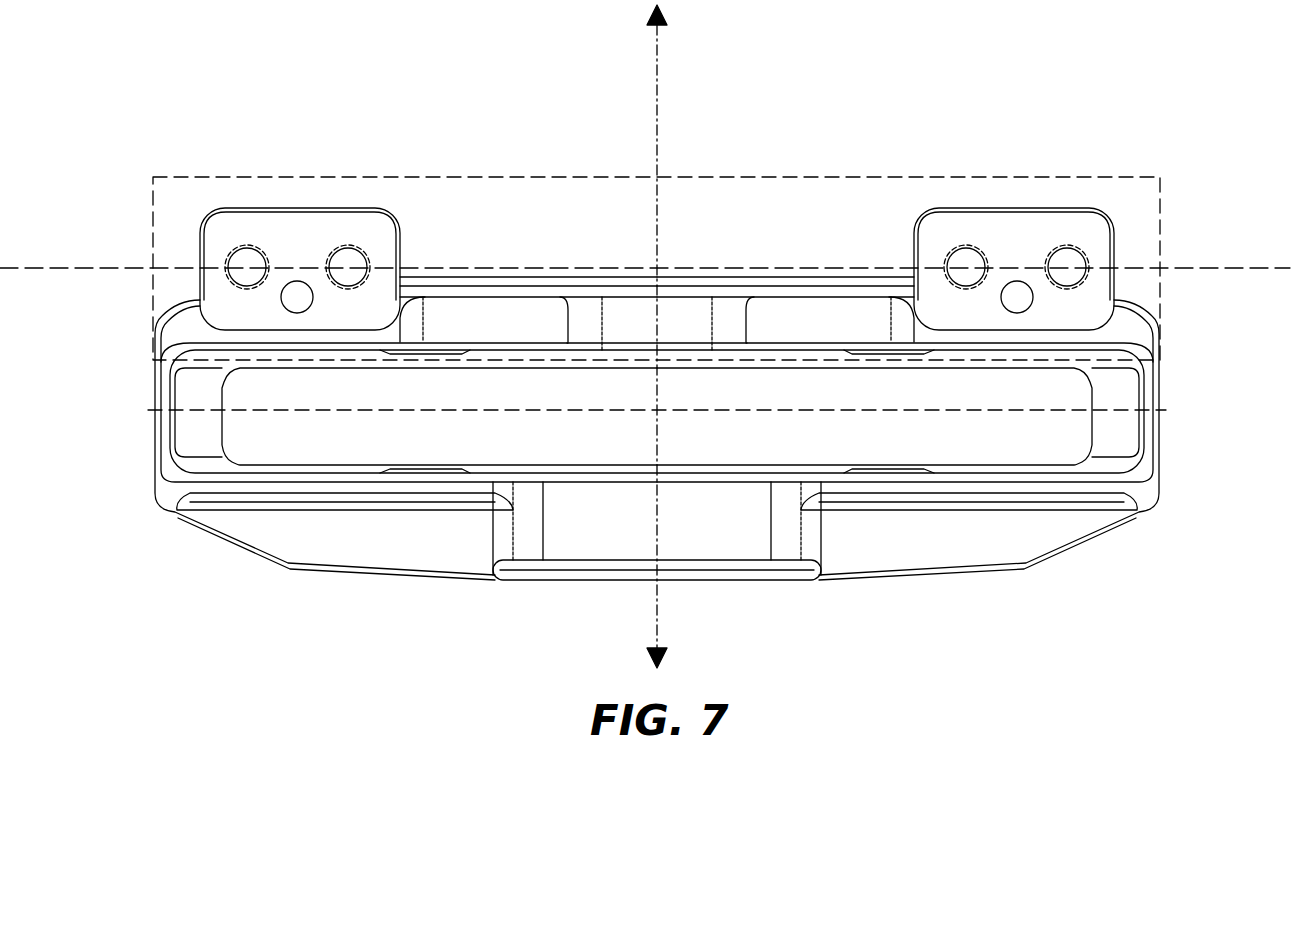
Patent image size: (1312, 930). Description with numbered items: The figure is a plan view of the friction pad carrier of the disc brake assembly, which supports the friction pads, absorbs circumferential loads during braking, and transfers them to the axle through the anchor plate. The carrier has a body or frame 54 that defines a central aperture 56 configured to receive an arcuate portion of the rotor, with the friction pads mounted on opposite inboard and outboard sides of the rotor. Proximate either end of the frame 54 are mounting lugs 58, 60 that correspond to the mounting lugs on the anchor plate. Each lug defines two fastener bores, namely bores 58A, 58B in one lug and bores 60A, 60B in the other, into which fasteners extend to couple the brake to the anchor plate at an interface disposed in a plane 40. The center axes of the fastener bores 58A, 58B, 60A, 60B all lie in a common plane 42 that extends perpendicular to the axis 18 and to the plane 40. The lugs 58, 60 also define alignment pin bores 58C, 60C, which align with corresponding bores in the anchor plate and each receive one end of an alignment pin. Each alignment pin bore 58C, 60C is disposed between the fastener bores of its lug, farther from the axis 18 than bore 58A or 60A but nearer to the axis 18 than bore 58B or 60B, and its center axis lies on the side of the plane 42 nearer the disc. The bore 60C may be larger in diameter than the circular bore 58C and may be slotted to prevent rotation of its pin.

The axis 18 is at (657, 122).
The plane 40 is at (1162, 210).
The common plane 42 is at (1238, 267).
The frame 54 is at (667, 535).
The central aperture 56 is at (718, 380).
The mounting lug 58 is at (1013, 225).
The fastener bore 58A is at (966, 280).
The fastener bore 58B is at (1078, 272).
The alignment pin bore 58C is at (1026, 300).
The mounting lug 60 is at (318, 217).
The fastener bore 60A is at (353, 278).
The fastener bore 60B is at (232, 262).
The alignment pin bore 60C is at (282, 303).